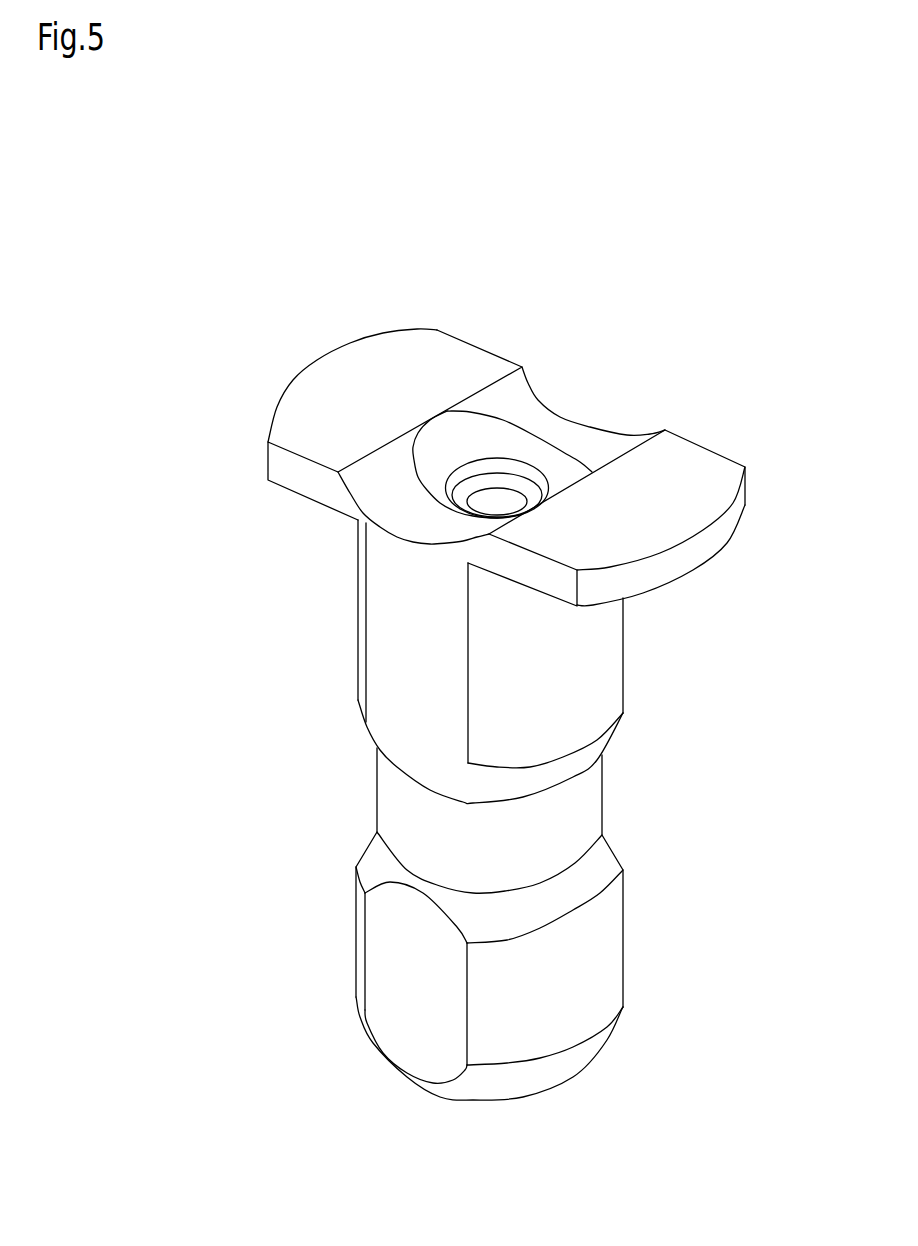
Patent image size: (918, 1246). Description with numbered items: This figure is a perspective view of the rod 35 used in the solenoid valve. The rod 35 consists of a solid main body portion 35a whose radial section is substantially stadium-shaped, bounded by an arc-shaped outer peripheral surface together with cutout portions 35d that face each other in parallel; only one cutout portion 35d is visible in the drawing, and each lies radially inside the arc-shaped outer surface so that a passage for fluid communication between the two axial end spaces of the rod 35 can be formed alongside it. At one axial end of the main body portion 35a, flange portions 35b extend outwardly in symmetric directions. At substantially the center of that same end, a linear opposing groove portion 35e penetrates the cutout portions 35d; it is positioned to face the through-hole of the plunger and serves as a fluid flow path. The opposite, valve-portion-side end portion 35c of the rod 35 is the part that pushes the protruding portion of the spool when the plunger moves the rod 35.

The rod 35 is at (641, 364).
The main body portion 35a is at (590, 665).
The flange portions 35b is at (350, 390).
The valve-portion-side end portion 35c is at (507, 1102).
The cutout portions 35d is at (411, 637).
The opposing groove portion 35e is at (565, 432).